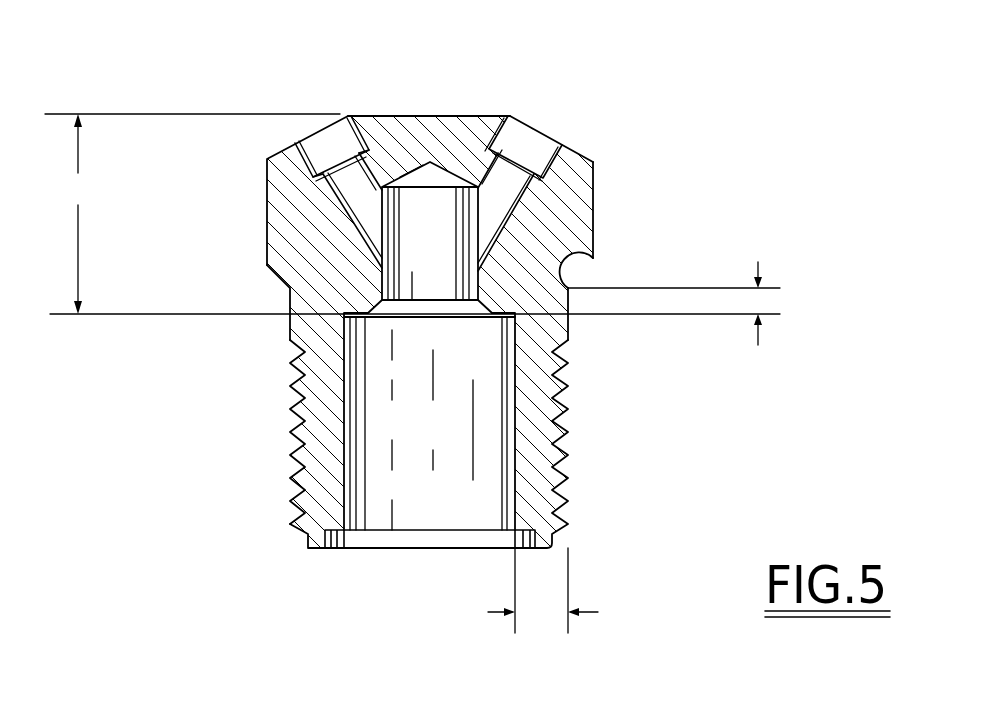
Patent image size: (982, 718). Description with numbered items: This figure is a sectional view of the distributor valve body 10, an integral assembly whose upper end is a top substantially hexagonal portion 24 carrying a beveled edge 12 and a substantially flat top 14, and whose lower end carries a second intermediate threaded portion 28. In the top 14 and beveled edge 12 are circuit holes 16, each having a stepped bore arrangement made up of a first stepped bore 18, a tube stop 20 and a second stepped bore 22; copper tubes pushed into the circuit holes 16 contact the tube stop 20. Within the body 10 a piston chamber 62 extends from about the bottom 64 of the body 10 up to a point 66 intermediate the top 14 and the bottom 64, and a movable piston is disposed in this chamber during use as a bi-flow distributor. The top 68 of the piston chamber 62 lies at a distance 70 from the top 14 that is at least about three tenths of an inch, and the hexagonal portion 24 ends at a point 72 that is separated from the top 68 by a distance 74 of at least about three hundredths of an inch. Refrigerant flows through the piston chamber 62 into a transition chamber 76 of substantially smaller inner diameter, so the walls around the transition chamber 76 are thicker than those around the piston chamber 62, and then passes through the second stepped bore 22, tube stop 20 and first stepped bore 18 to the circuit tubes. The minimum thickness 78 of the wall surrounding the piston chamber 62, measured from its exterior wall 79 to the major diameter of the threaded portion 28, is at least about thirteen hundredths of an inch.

The distributor valve body 10 is at (316, 66).
The beveled edge 12 is at (577, 152).
The top 14 is at (437, 115).
The circuit holes 16 is at (543, 121).
The first stepped bore 18 is at (313, 168).
The tube stop 20 is at (326, 183).
The second stepped bore 22 is at (343, 222).
The top substantially hexagonal portion 24 is at (607, 203).
The second intermediate threaded portion 28 is at (291, 438).
The piston chamber 62 is at (462, 480).
The bottom 64 is at (317, 549).
The point intermediate the top and the bottom 66 is at (291, 314).
The top of piston chamber 68 is at (566, 358).
The distance 70 is at (412, 214).
The point where hexagonal portion ends 72 is at (594, 259).
The distance 74 is at (762, 303).
The transition chamber 76 is at (422, 228).
The minimum thickness 78 is at (543, 590).
The exterior wall of piston chamber 79 is at (518, 420).